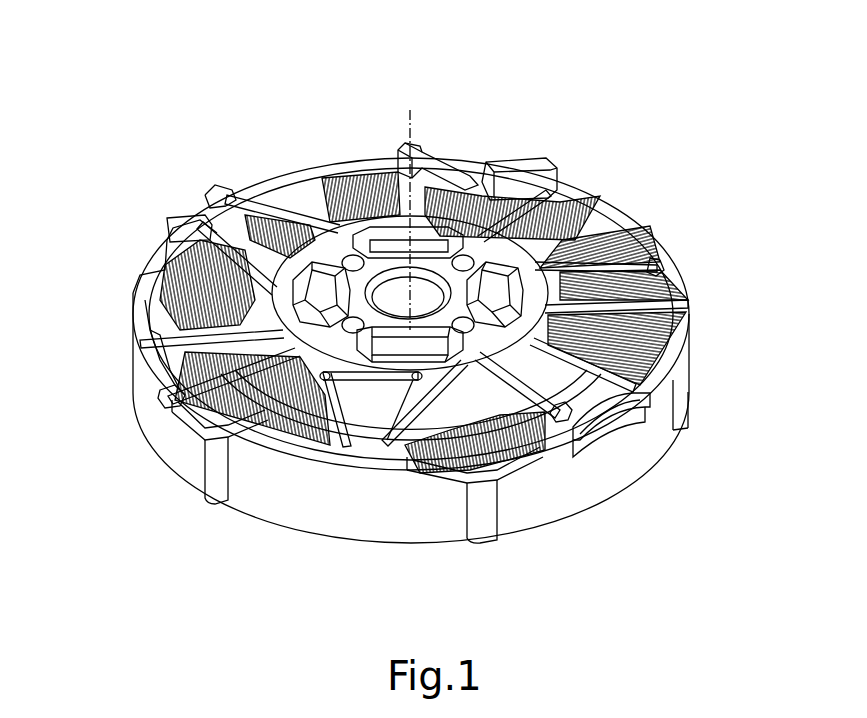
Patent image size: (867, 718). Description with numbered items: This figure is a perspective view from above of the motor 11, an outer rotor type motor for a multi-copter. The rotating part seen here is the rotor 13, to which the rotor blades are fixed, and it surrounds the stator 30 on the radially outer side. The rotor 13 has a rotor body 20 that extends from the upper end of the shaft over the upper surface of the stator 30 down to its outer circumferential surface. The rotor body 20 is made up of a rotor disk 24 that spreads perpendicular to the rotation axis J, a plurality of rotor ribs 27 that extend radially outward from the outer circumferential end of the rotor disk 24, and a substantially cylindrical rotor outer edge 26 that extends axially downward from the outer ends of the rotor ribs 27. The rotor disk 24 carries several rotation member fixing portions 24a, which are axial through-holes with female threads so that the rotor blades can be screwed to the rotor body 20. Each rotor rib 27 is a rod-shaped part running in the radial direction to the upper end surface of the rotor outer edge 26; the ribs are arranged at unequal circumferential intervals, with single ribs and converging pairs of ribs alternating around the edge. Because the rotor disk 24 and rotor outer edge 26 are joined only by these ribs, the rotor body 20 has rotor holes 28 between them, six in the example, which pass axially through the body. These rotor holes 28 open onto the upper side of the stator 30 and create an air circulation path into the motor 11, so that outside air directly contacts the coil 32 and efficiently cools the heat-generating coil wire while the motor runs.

The motor 11 is at (640, 100).
The rotor 13 is at (641, 216).
The rotor body 20 is at (205, 195).
The rotor disk 24 is at (375, 200).
The rotation member fixing portion 24a is at (480, 263).
The rotor outer edge 26 is at (613, 470).
The rotor rib 27 is at (308, 200).
The rotor hole 28 is at (270, 210).
The stator 30 is at (180, 273).
The coil 32 is at (225, 422).
The rotation axis J is at (410, 110).